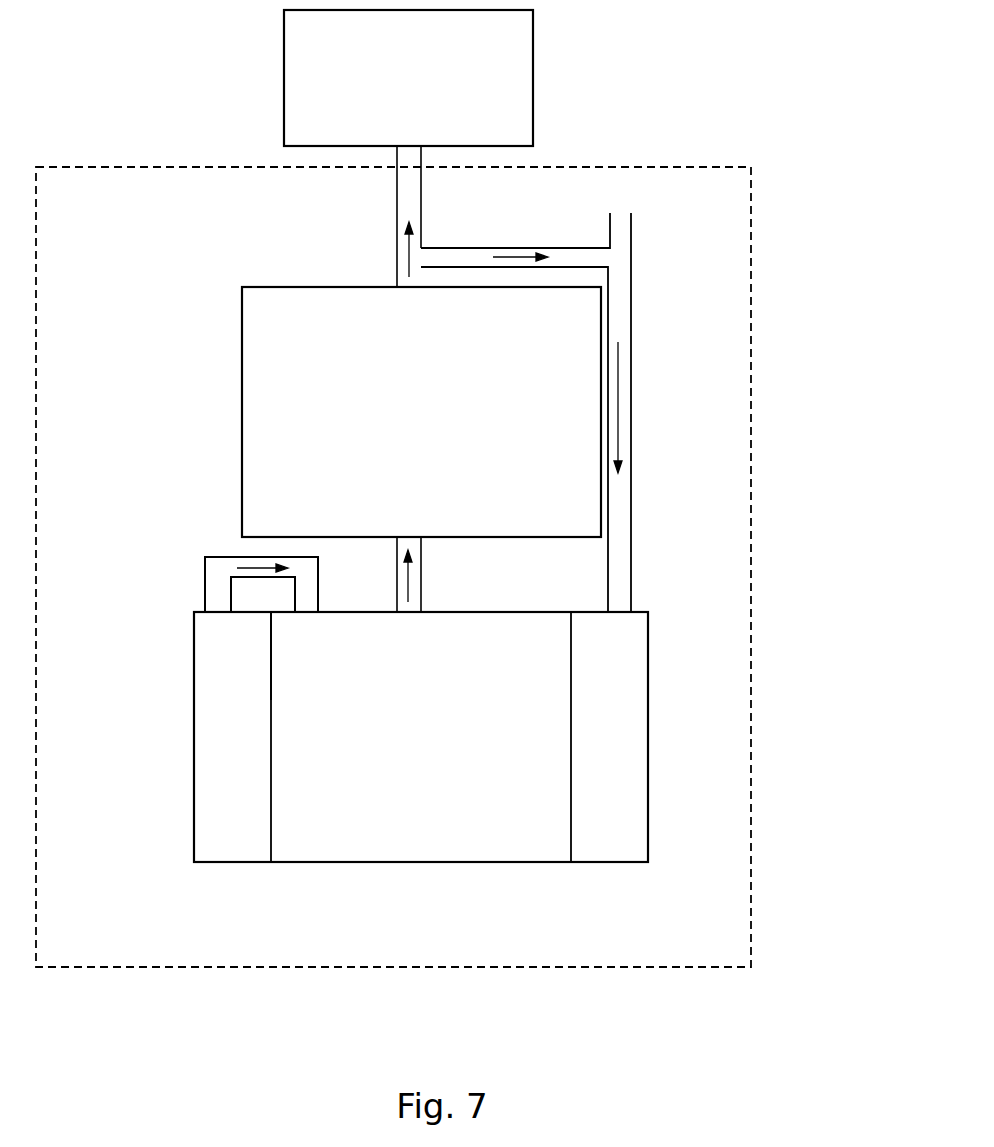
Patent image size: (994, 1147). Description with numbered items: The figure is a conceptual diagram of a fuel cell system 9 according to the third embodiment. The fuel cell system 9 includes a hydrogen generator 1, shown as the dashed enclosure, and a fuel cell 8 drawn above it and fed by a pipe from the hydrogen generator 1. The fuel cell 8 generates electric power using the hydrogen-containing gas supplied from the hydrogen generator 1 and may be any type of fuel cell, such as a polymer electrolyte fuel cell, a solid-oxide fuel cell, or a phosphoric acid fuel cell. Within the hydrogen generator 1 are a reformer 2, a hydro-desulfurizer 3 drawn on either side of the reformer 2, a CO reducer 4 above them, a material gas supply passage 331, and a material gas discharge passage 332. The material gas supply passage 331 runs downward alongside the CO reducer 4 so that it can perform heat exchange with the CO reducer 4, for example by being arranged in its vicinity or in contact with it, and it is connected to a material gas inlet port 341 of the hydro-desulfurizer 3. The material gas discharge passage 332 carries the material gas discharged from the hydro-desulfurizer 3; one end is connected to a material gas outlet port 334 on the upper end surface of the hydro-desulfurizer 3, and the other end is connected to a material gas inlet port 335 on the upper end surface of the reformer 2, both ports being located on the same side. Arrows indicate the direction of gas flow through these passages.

The fuel cell system 9 is at (812, 43).
The fuel cell 8 is at (408, 78).
The hydrogen generator 1 is at (751, 185).
The CO reducer 4 is at (421, 412).
The reformer 2 is at (421, 737).
The hydro-desulfurizer 3 is at (420, 737).
The material gas supply passage 331 is at (631, 512).
The material gas discharge passage 332 is at (223, 556).
The material gas outlet port 334 is at (197, 602).
The material gas inlet port 335 is at (305, 620).
The material gas inlet port 341 is at (645, 600).